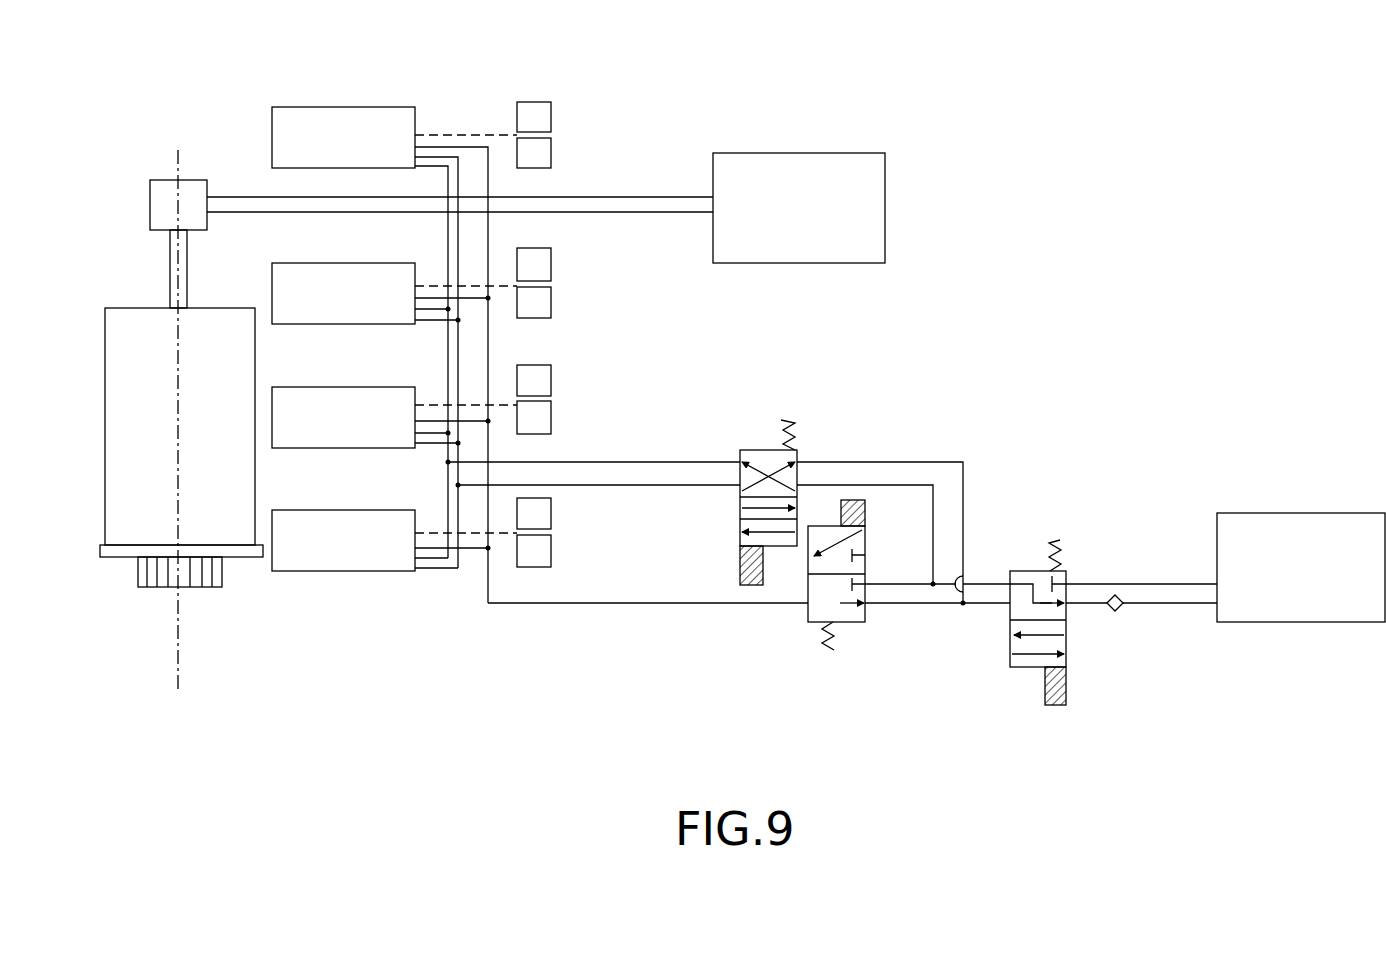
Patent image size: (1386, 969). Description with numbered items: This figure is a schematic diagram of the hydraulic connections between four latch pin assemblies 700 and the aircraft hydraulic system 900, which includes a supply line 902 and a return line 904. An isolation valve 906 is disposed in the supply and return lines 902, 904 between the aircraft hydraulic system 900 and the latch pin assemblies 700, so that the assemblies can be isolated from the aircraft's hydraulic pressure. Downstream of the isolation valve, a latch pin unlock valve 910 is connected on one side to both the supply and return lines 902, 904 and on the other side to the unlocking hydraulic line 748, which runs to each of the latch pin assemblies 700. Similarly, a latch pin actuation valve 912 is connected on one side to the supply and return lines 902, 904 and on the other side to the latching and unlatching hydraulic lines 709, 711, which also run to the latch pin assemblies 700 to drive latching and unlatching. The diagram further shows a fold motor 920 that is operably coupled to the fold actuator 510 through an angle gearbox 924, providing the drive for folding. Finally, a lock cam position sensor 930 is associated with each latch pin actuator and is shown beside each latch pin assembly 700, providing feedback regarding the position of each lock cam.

The fold actuator 510 is at (228, 527).
The latch pin assembly 700 is at (343, 107).
The latching hydraulic line 709 is at (628, 462).
The unlatching hydraulic line 711 is at (648, 485).
The unlocking hydraulic line 748 is at (615, 603).
The aircraft hydraulic system 900 is at (1292, 512).
The supply line 902 is at (1115, 584).
The return line 904 is at (1130, 608).
The isolation valve 906 is at (1010, 642).
The latch pin unlock valve 910 is at (842, 622).
The latch pin actuation valve 912 is at (797, 452).
The fold motor 920 is at (885, 205).
The angle gearbox 924 is at (167, 182).
The lock cam position sensor 930 is at (551, 128).